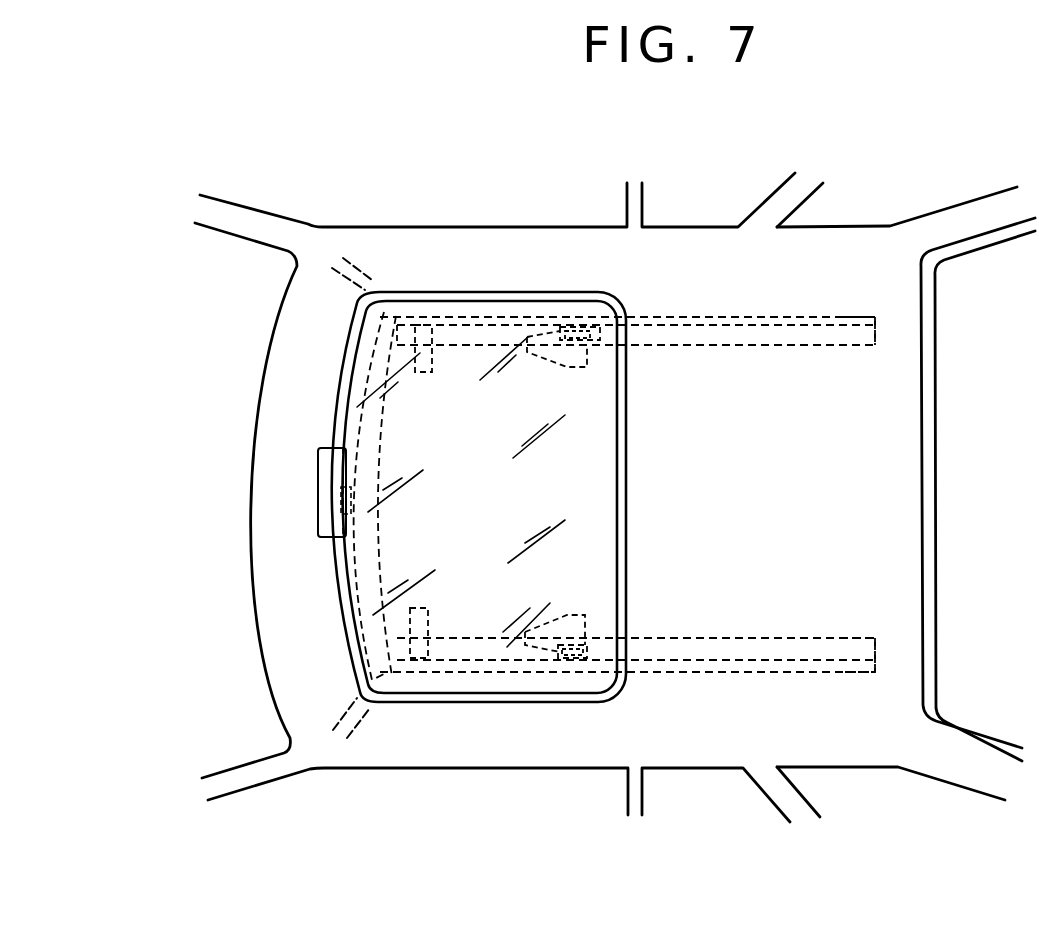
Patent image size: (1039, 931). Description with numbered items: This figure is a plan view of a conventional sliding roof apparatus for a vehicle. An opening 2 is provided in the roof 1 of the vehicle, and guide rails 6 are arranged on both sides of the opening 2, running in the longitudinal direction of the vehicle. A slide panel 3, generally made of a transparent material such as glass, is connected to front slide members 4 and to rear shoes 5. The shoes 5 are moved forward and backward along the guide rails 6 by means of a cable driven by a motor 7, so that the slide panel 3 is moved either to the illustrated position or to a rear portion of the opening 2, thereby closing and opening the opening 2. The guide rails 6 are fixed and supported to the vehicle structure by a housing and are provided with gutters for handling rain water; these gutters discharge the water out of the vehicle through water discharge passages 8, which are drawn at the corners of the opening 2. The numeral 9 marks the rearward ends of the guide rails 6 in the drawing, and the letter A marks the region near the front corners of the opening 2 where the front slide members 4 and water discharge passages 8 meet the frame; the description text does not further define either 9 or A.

The roof 1 is at (685, 252).
The opening 2 is at (620, 448).
The slide panel 3 is at (508, 508).
The front slide members 4 is at (434, 326).
The rear shoes 5 is at (594, 326).
The guide rails 6 is at (788, 346).
The motor 7 is at (320, 513).
The water discharge passages 8 is at (351, 268).
The rail rear ends 9 is at (852, 317).
The seal edge line A is at (388, 316).